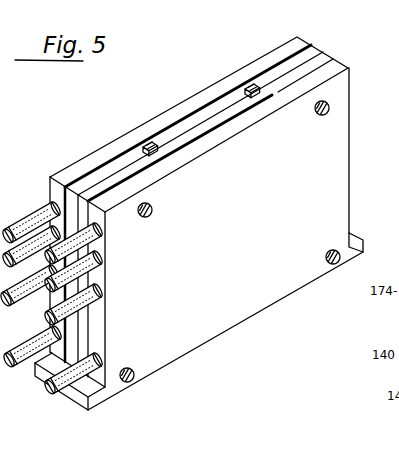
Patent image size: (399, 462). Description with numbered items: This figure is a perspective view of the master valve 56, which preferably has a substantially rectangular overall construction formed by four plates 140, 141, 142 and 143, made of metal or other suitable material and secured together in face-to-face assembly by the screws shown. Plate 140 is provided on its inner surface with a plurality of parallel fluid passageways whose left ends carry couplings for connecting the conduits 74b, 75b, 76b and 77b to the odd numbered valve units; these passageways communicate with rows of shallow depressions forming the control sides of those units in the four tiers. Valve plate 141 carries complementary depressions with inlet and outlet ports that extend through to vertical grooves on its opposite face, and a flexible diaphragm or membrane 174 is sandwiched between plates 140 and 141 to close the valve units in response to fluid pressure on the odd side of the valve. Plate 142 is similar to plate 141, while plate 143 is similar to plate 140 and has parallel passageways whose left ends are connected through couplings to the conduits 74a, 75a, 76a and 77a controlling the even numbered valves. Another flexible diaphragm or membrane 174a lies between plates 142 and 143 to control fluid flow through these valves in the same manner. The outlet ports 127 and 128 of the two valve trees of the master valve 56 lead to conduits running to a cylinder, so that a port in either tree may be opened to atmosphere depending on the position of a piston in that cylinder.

The master valve 56 is at (262, 224).
The conduit 74a is at (62, 390).
The conduit 74b is at (18, 364).
The conduit 75a is at (101, 300).
The conduit 75b is at (19, 300).
The conduit 76a is at (101, 264).
The conduit 76b is at (34, 228).
The conduit 77a is at (102, 238).
The conduit 77b is at (40, 206).
The outlet port 127 is at (145, 146).
The outlet port 128 is at (250, 86).
The plate 140 is at (283, 50).
The valve plate 141 is at (313, 55).
The plate 142 is at (325, 58).
The plate 143 is at (349, 68).
The flexible diaphragm or membrane 174 is at (178, 121).
The flexible diaphragm or membrane 174a is at (251, 110).